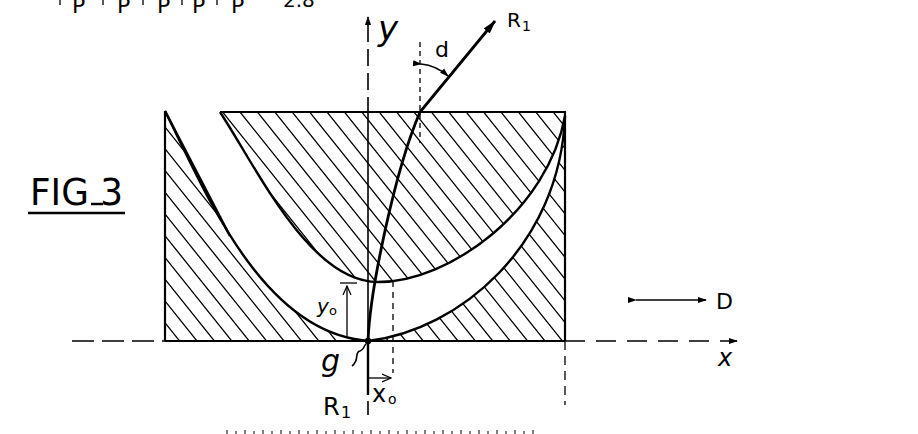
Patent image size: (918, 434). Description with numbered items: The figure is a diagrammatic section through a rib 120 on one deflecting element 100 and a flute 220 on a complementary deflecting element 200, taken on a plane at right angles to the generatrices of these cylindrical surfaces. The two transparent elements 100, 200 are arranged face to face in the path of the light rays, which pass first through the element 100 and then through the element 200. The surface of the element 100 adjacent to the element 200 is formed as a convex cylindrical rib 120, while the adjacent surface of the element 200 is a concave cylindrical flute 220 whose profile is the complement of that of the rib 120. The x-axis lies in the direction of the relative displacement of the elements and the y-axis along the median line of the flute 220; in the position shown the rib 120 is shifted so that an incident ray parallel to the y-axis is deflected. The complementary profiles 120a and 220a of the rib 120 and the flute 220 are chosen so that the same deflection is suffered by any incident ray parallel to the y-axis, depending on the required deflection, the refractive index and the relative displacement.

The transparent element 100 is at (332, 104).
The convex cylindrical rib 120 is at (433, 268).
The profile of the rib 120a is at (265, 190).
The transparent element 200 is at (155, 241).
The concave cylindrical flute 220 is at (227, 235).
The profile of the flute 220a is at (182, 136).